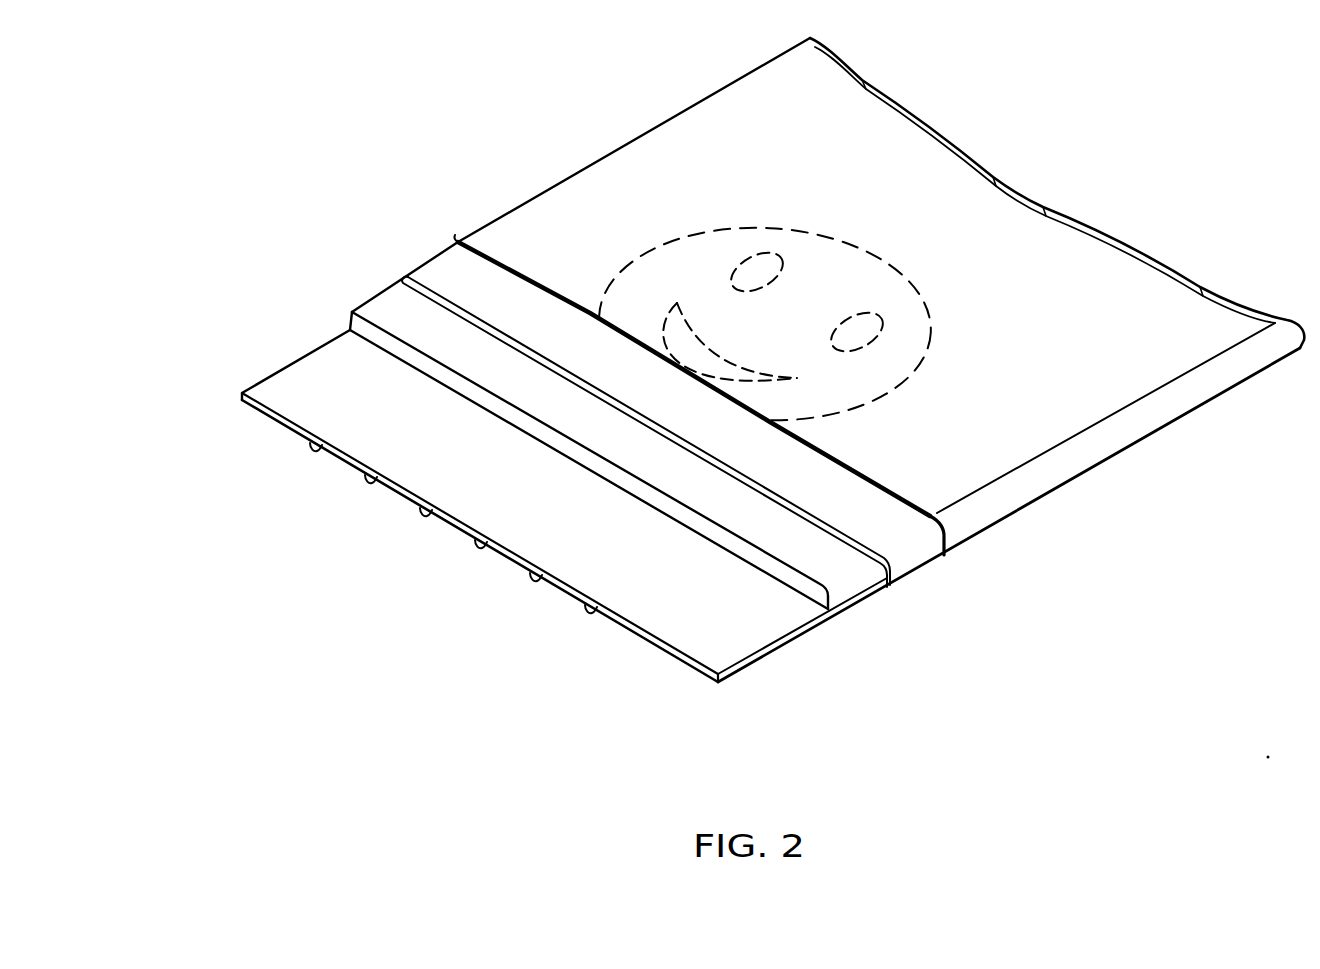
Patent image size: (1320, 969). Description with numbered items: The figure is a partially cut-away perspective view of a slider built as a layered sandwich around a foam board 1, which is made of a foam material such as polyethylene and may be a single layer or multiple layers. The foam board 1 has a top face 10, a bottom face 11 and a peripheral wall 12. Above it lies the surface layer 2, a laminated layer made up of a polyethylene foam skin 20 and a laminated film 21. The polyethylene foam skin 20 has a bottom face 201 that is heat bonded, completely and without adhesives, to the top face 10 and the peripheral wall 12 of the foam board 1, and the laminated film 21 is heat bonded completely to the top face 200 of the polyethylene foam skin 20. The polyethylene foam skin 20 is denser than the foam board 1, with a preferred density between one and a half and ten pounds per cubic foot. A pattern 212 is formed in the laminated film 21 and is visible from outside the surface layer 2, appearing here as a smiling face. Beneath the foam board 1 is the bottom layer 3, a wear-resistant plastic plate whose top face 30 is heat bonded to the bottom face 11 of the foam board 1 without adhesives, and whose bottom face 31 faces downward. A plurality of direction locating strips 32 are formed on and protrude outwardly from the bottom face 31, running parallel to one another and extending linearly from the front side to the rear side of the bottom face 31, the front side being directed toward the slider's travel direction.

The foam board 1 is at (624, 431).
The top face 10 is at (395, 318).
The bottom face 11 is at (392, 350).
The peripheral wall 12 is at (857, 547).
The top face 200 is at (428, 283).
The bottom face 201 is at (842, 588).
The surface layer 2 is at (828, 370).
The polyethylene foam skin 20 is at (928, 558).
The laminated film 21 is at (997, 503).
The pattern 212 is at (697, 245).
The bottom layer 3 is at (530, 518).
The top face 30 is at (302, 398).
The bottom face 31 is at (288, 428).
The direction locating strips 32 is at (420, 510).